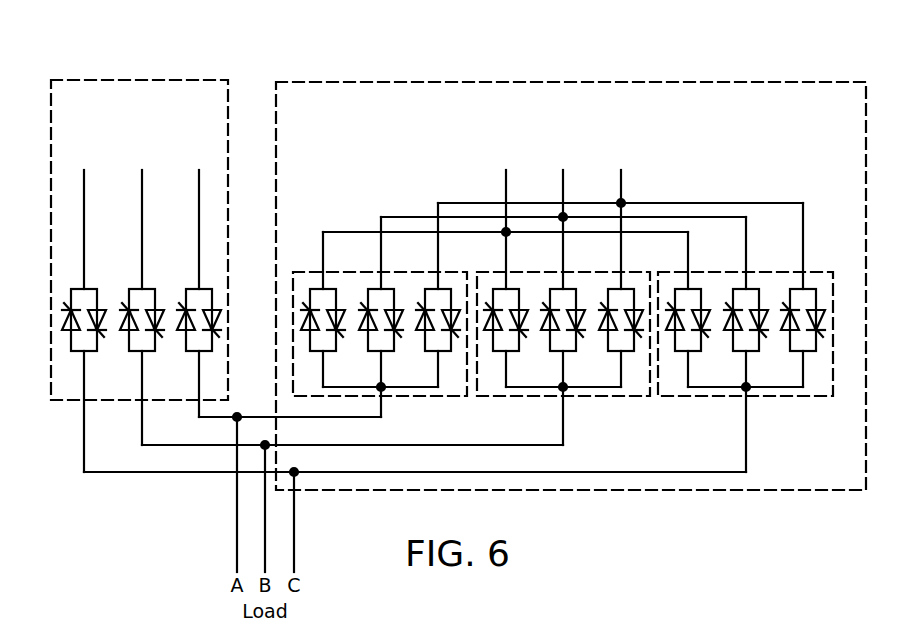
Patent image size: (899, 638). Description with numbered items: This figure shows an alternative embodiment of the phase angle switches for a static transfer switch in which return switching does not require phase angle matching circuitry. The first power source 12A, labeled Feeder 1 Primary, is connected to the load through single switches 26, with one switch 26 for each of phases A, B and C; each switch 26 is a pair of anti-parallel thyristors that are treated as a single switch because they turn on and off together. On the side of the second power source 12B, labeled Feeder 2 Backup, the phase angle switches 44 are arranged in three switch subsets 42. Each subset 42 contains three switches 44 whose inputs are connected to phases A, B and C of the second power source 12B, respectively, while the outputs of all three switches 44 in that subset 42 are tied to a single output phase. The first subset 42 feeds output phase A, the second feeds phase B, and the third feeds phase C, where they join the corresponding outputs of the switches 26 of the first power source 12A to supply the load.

The first power source 12A is at (95, 68).
The second power source 12B is at (411, 68).
The switch 26 is at (83, 287).
The switch subset 42 is at (434, 397).
The phase angle switch 44 is at (322, 288).